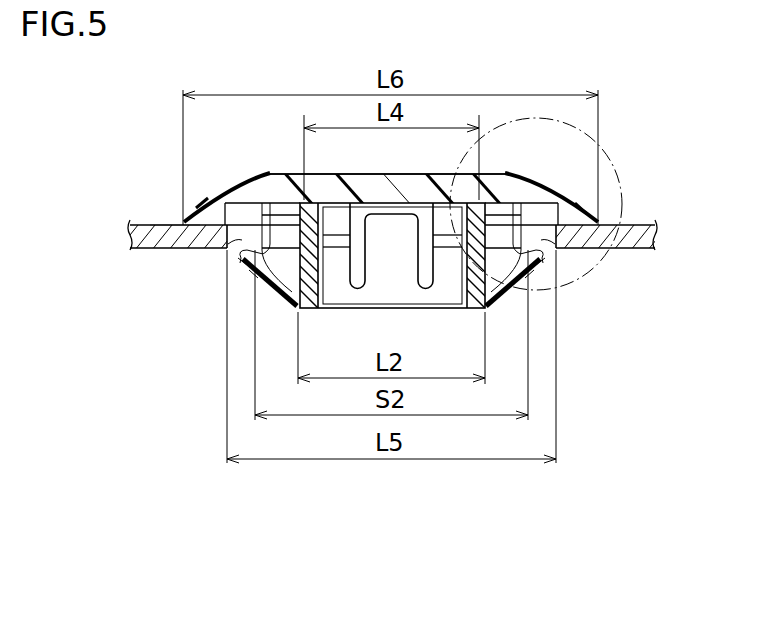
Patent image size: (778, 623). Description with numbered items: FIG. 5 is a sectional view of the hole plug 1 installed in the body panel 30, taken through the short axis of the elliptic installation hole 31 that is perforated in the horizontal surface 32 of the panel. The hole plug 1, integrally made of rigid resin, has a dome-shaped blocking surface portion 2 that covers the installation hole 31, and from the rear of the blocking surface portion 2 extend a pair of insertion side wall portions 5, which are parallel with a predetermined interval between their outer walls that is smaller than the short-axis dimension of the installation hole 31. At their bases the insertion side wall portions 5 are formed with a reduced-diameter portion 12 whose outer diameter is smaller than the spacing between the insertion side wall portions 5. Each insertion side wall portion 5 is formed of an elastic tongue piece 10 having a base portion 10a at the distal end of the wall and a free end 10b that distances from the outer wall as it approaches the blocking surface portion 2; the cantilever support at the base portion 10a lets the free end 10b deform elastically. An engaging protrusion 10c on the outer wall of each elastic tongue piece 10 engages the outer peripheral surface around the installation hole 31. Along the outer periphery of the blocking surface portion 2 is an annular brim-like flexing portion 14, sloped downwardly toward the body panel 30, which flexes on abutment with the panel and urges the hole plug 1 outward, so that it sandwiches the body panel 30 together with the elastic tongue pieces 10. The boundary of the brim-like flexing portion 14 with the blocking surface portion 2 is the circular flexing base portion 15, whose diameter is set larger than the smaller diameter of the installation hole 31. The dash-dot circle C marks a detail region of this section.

The hole plug 1 is at (258, 168).
The blocking surface portion 2 is at (354, 175).
The insertion side wall portions 5 is at (300, 316).
The elastic tongue piece 10 is at (266, 302).
The base portion 10a is at (272, 306).
The free end 10b is at (250, 200).
The engaging protrusion 10c is at (248, 270).
The reduced-diameter portion 12 is at (290, 200).
The brim-like flexing portion 14 is at (220, 200).
The flexing base portion 15 is at (224, 240).
The body panel 30 is at (138, 220).
The installation hole 31 is at (240, 262).
The horizontal surface 32 is at (170, 224).
The detail region C is at (614, 154).